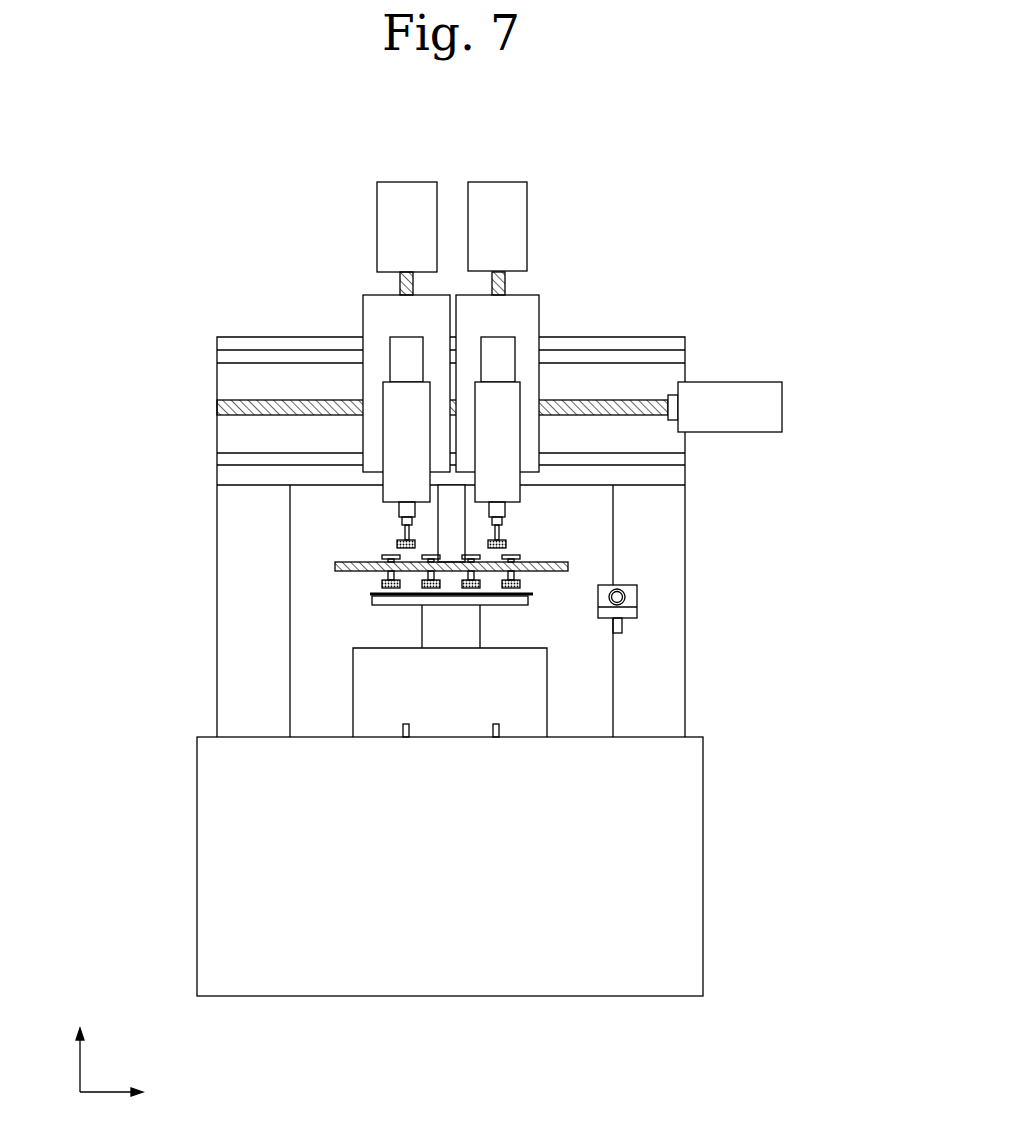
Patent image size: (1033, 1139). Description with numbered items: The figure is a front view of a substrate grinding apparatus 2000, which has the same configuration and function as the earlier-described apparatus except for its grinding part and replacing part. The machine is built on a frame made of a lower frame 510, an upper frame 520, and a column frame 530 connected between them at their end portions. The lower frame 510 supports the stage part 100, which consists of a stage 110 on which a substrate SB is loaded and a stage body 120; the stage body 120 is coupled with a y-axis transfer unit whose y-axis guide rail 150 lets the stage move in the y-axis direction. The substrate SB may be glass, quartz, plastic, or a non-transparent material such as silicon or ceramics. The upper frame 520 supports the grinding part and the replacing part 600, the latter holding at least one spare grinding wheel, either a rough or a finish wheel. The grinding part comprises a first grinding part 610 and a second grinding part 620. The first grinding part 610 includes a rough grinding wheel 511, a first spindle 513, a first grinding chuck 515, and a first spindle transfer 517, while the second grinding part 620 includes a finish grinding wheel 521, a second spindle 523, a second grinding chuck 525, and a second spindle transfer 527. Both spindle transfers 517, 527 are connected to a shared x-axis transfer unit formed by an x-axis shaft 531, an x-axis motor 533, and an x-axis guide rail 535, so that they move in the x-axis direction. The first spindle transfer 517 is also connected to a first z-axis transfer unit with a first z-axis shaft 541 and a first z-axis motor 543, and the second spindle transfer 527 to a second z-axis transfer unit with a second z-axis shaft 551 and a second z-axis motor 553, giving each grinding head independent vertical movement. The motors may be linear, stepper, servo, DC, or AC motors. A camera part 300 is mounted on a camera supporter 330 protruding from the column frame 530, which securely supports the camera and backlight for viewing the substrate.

The substrate grinding apparatus 2000 is at (686, 200).
The upper frame 520 is at (217, 343).
The x-axis guide rail 535 is at (678, 356).
The x-axis shaft 531 is at (623, 400).
The x-axis motor 533 is at (780, 406).
The column frame 530 is at (223, 708).
The first z-axis motor 543 is at (377, 222).
The first z-axis shaft 541 is at (400, 283).
The second z-axis motor 553 is at (527, 222).
The second z-axis shaft 551 is at (505, 283).
The first grinding part 610 is at (131, 473).
The first spindle transfer 517 is at (375, 443).
The first spindle 513 is at (398, 510).
The first grinding chuck 515 is at (401, 530).
The rough grinding wheel 511 is at (396, 545).
The second grinding part 620 is at (771, 473).
The second spindle transfer 527 is at (530, 443).
The second spindle 523 is at (506, 510).
The second grinding chuck 525 is at (503, 530).
The finish grinding wheel 521 is at (508, 545).
The replacing part 600 is at (553, 577).
The substrate SB is at (370, 594).
The stage part 100 is at (131, 620).
The stage 110 is at (372, 601).
The stage body 120 is at (353, 665).
The lower frame 510 is at (208, 853).
The y-axis guide rail 150 is at (407, 737).
The camera part 300 is at (645, 592).
The camera supporter 330 is at (637, 612).